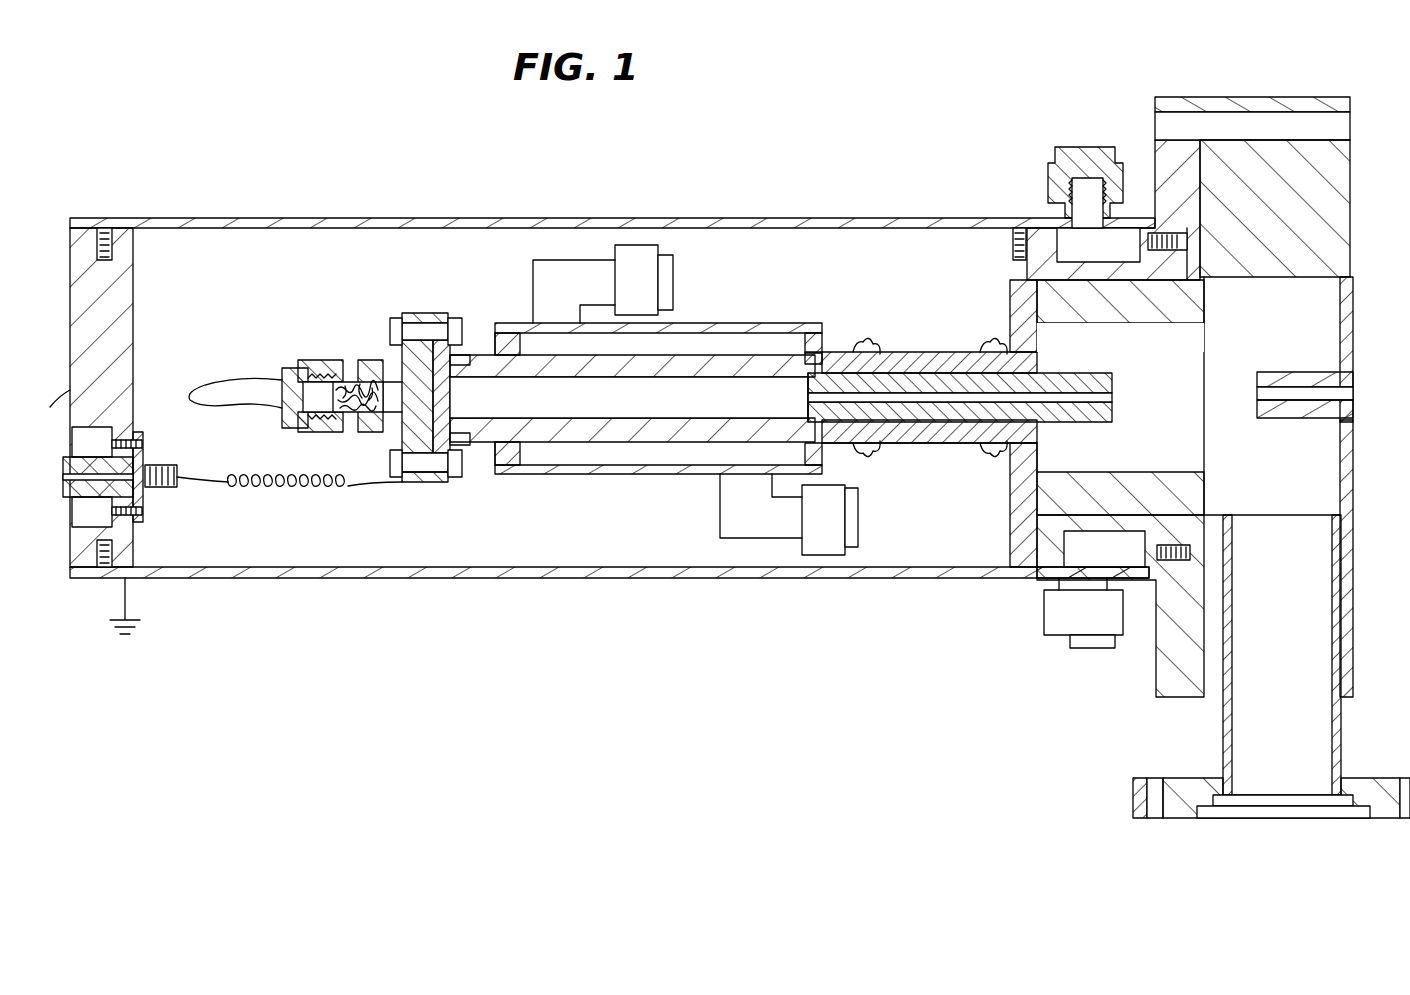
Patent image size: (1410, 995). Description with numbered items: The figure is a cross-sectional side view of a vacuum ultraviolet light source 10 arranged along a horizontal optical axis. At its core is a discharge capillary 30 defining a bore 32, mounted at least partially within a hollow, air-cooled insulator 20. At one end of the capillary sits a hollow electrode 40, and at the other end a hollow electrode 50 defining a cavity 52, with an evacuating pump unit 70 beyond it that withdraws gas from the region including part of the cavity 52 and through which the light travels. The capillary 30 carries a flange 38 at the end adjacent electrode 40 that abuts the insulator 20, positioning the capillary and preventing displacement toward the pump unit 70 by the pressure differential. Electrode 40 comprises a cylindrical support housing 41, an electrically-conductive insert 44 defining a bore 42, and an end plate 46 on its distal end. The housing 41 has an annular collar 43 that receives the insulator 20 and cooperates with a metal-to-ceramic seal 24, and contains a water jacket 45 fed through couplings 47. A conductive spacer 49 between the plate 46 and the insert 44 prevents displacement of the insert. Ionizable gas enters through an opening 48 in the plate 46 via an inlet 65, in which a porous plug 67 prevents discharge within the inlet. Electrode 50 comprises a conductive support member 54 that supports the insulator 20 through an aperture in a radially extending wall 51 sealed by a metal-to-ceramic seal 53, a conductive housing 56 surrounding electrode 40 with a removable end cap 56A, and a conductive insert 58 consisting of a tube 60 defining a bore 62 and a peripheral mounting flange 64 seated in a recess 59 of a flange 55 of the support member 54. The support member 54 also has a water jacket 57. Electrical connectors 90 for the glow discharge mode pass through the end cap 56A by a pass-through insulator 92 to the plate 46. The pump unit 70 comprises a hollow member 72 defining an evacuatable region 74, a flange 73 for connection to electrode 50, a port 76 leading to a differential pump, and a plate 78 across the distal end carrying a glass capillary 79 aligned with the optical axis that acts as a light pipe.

The ultraviolet light source 10 is at (858, 172).
The insulator 20 is at (945, 448).
The metal-to-ceramic seal 24 is at (870, 345).
The discharge capillary 30 is at (1055, 375).
The bore 32 is at (1112, 400).
The flange 38 is at (808, 388).
The hollow electrode 40 is at (558, 480).
The support housing 41 is at (495, 470).
The bore 42 is at (629, 397).
The annular flange or collar 43 is at (840, 335).
The electrically-conductive insert 44 is at (485, 377).
The water jacket 45 is at (718, 340).
The end plate 46 is at (400, 338).
The couplings 47 is at (673, 277).
The opening 48 is at (436, 397).
The electrically conductive spacer 49 is at (452, 415).
The hollow electrode 50 is at (1180, 92).
The radially extending wall 51 is at (1040, 455).
The cavity 52 is at (1120, 324).
The metal-to-ceramic seal 53 is at (990, 340).
The support member 54 is at (1010, 298).
The flange 55 is at (1155, 165).
The housing 56 is at (400, 218).
The end cap 56A is at (42, 417).
The water jacket 57 is at (1098, 245).
The electrically conductive insert 58 is at (1205, 495).
The recess 59 is at (1190, 535).
The tube 60 is at (1120, 325).
The bore 62 is at (1120, 475).
The peripheral mounting flange 64 is at (1200, 262).
The inlet 65 is at (232, 405).
The porous plug 67 is at (355, 372).
The evacuating pump unit 70 is at (1357, 658).
The hollow member 72 is at (1352, 188).
The flange 73 is at (1270, 97).
The evacuatable region 74 is at (1272, 396).
The port 76 is at (1225, 735).
The plate 78 is at (1350, 468).
The capillary 79 is at (1356, 388).
The electrical connectors 90 is at (325, 492).
The pass-through insulator 92 is at (63, 490).